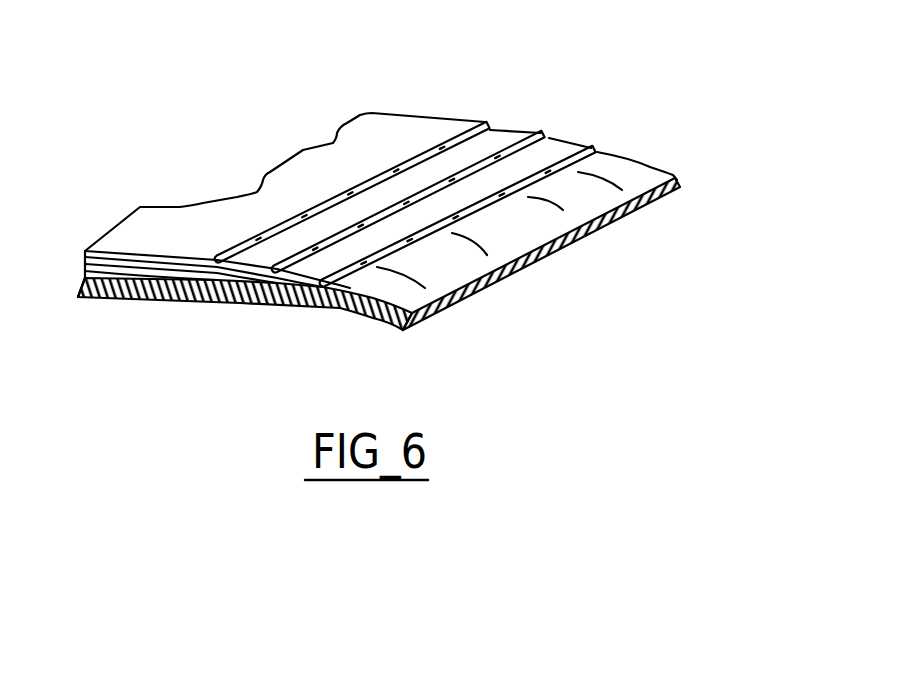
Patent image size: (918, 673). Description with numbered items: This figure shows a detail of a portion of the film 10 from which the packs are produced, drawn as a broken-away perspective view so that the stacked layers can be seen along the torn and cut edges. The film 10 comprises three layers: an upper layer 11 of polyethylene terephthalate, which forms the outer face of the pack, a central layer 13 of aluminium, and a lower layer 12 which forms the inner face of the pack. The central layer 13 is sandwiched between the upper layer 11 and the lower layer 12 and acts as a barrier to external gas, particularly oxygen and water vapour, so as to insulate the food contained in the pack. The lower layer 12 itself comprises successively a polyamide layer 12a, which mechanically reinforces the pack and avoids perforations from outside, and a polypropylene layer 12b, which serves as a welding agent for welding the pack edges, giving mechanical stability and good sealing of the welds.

The film 10 is at (426, 166).
The upper layer 11 is at (390, 137).
The lower layer 12 is at (638, 115).
The polyamide layer 12a is at (543, 153).
The polypropylene layer 12b is at (630, 182).
The central layer 13 is at (497, 143).